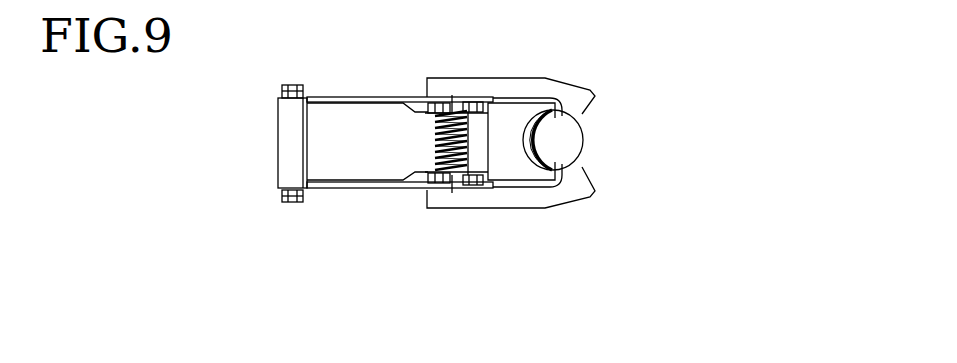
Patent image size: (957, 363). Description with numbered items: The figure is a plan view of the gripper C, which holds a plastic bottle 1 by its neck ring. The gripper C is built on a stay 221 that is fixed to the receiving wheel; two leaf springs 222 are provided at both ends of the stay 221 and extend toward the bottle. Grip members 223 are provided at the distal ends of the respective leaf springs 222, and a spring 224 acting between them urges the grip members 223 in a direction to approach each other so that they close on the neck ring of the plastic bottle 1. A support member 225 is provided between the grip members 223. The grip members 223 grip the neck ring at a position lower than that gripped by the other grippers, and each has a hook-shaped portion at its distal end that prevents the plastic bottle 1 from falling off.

The plastic bottle 1 is at (585, 139).
The stay 221 is at (348, 135).
The leaf springs 222 is at (343, 98).
The grip members 223 is at (543, 87).
The spring 224 is at (433, 133).
The support member 225 is at (507, 170).
The gripper C is at (464, 78).